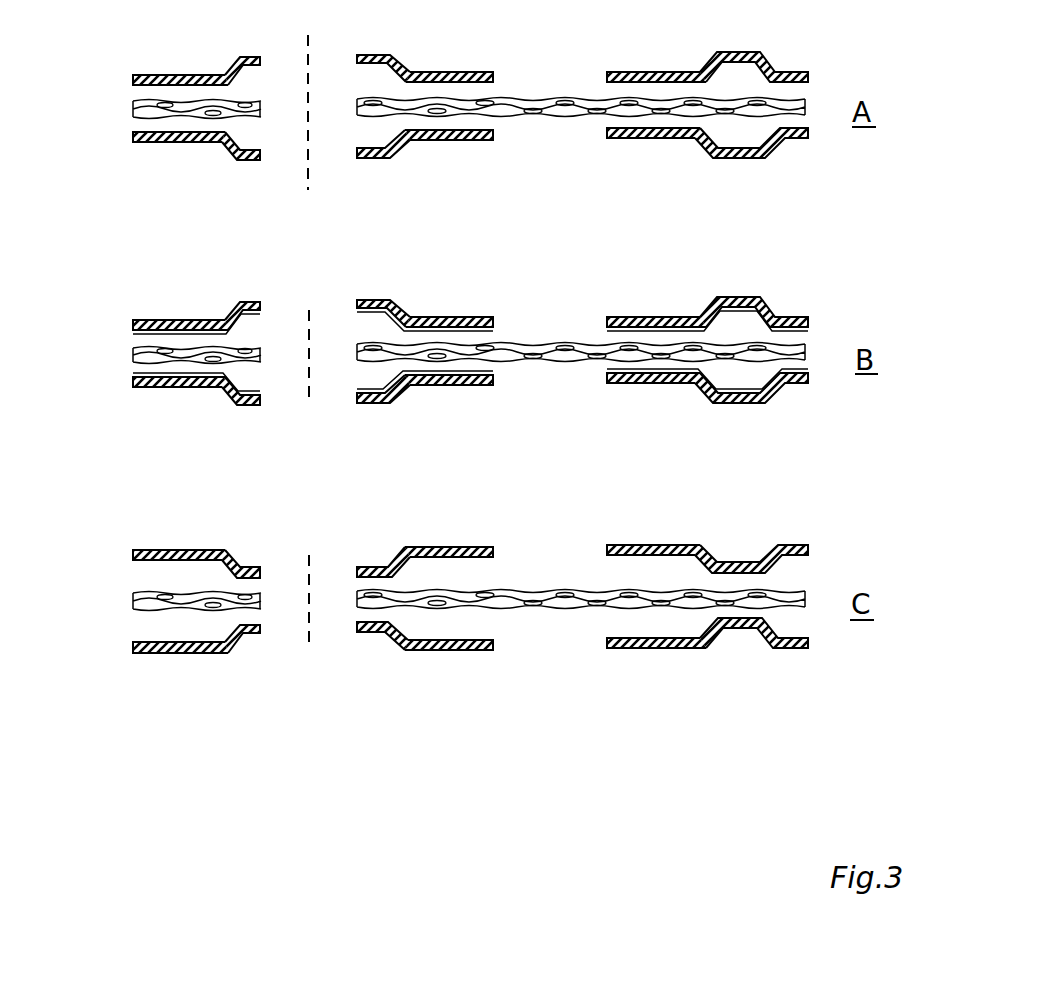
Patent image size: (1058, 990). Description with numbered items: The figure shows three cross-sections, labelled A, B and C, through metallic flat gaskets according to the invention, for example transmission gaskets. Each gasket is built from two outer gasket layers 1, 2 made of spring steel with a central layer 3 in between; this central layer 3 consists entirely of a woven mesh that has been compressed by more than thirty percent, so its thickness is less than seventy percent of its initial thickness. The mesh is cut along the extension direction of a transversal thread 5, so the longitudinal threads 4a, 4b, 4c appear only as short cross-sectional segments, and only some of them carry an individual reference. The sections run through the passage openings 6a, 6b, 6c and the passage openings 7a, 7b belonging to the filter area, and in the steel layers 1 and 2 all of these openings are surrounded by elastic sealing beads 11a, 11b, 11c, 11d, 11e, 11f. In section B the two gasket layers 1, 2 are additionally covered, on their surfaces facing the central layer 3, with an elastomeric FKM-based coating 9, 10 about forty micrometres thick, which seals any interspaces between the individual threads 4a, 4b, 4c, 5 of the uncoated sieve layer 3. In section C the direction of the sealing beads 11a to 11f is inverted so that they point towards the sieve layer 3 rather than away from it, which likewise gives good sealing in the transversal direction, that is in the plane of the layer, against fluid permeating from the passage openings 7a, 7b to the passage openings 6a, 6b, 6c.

The gasket layer 1 is at (134, 75).
The gasket layer 2 is at (137, 142).
The central layer 3 is at (134, 109).
The longitudinal thread 4a is at (384, 101).
The longitudinal thread 4b is at (430, 113).
The longitudinal thread 4c is at (487, 101).
The transversal thread 5 is at (540, 109).
The passage opening 6a is at (275, 58).
The passage opening 6b is at (278, 161).
The passage opening 6c is at (300, 120).
The passage opening 7a is at (552, 78).
The passage opening 7b is at (585, 133).
The elastomeric coating 9 is at (133, 333).
The elastomeric coating 10 is at (133, 375).
The elastic sealing bead 11a is at (229, 71).
The elastic sealing bead 11b is at (228, 149).
The elastic sealing bead 11c is at (401, 66).
The elastic sealing bead 11d is at (400, 152).
The elastic sealing bead 11e is at (711, 64).
The elastic sealing bead 11f is at (706, 149).